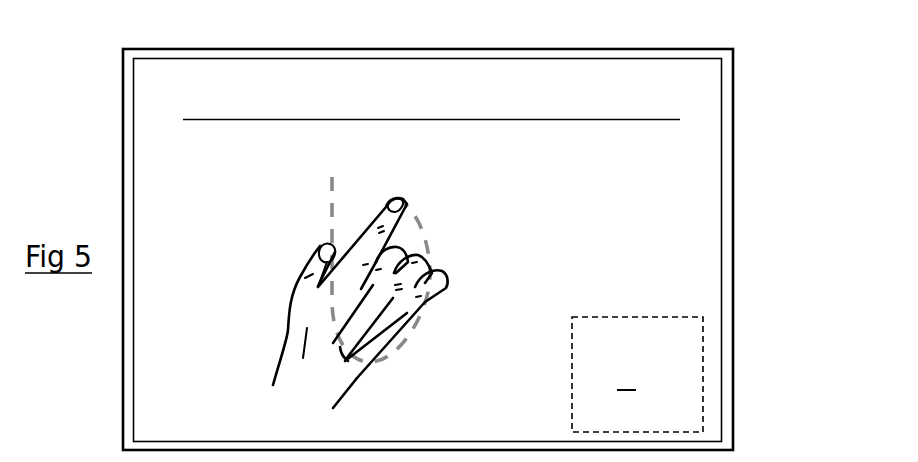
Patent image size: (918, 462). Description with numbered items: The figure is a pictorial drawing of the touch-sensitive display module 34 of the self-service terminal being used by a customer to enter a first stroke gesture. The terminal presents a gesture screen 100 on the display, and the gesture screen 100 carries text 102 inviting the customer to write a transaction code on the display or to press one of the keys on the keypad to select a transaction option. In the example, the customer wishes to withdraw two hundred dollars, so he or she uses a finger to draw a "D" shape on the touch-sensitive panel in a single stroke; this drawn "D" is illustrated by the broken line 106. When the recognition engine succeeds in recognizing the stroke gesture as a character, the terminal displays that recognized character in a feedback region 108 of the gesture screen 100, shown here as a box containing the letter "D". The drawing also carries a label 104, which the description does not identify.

The gesture screen 100 is at (517, 72).
The touch-sensitive display module 34 is at (733, 377).
The text 102 is at (582, 117).
The handwritten character trace 104 is at (331, 204).
The broken line 106 is at (385, 200).
The feedback region 108 is at (643, 313).